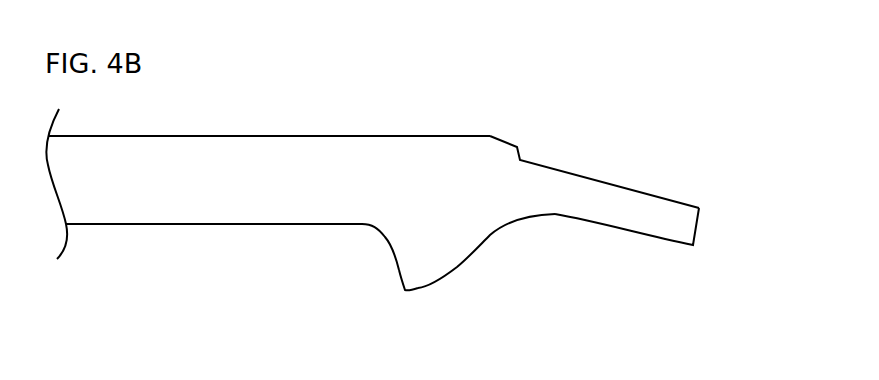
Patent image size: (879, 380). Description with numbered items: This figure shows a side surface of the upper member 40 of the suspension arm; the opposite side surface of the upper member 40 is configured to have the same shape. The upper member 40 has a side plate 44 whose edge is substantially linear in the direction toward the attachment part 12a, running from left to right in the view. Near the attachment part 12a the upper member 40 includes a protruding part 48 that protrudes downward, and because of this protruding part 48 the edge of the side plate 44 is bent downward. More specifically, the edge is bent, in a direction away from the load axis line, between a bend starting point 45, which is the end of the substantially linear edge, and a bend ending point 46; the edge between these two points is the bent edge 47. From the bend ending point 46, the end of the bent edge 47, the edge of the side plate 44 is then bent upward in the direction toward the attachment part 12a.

The upper member 40 is at (395, 126).
The side plate 44 is at (228, 142).
The bend starting point 45 is at (357, 225).
The bend ending point 46 is at (400, 298).
The bent edge 47 is at (393, 250).
The protruding part 48 is at (425, 261).
The attachment part 12a is at (684, 199).